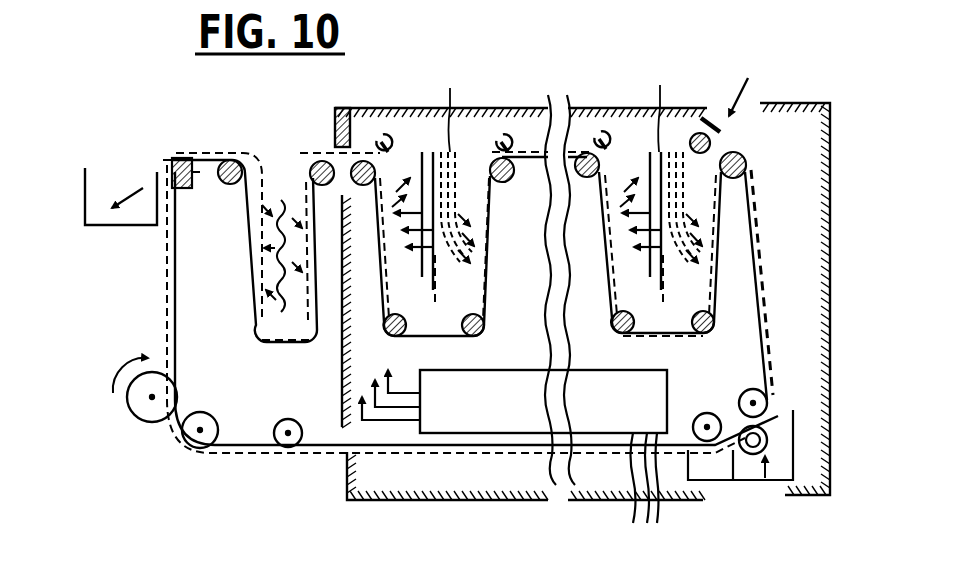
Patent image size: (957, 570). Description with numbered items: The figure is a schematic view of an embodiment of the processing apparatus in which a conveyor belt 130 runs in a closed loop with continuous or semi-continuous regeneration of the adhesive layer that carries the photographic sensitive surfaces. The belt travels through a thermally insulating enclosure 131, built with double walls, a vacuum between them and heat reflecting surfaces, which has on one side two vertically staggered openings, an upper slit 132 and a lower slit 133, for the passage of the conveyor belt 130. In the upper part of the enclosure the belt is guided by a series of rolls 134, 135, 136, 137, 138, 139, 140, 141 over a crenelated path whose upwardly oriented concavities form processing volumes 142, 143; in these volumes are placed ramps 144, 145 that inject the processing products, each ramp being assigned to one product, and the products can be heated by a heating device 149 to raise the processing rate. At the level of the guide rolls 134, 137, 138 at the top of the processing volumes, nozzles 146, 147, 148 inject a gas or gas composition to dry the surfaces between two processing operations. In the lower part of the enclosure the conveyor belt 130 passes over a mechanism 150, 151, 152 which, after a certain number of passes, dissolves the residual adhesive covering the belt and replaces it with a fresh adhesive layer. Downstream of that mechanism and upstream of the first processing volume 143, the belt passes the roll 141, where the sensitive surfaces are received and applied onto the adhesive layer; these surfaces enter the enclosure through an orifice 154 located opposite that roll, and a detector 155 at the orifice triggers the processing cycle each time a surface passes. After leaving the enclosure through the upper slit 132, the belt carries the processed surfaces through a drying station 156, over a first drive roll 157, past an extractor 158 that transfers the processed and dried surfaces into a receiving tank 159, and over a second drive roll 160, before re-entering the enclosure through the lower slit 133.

The conveyor belt 130 is at (172, 277).
The thermally insulating enclosure 131 is at (345, 480).
The upper slit 132 is at (317, 158).
The lower slit 133 is at (341, 432).
The guide roll 134 is at (352, 106).
The guide roll 135 is at (398, 339).
The guide roll 136 is at (486, 340).
The guide roll 137 is at (505, 183).
The guide roll 138 is at (590, 180).
The guide roll 139 is at (626, 336).
The guide roll 140 is at (711, 334).
The guide roll 141 is at (748, 164).
The processing volume 142 is at (472, 304).
The processing volume 143 is at (706, 304).
The ramp for injecting processing products 144 is at (451, 106).
The ramp for injecting processing products 145 is at (649, 105).
The nozzle 146 is at (378, 108).
The nozzle 147 is at (497, 110).
The nozzle 148 is at (593, 108).
The heating device 149 is at (526, 417).
The adhesive regeneration mechanism 150 is at (700, 415).
The adhesive regeneration mechanism 151 is at (750, 389).
The adhesive regeneration mechanism 152 is at (753, 455).
The orifice 154 is at (761, 87).
The detector 155 is at (708, 120).
The drying station 156 is at (268, 236).
The first drive roll 157 is at (232, 158).
The extractor 158 is at (178, 156).
The tank 159 is at (83, 186).
The second drive roll 160 is at (138, 412).